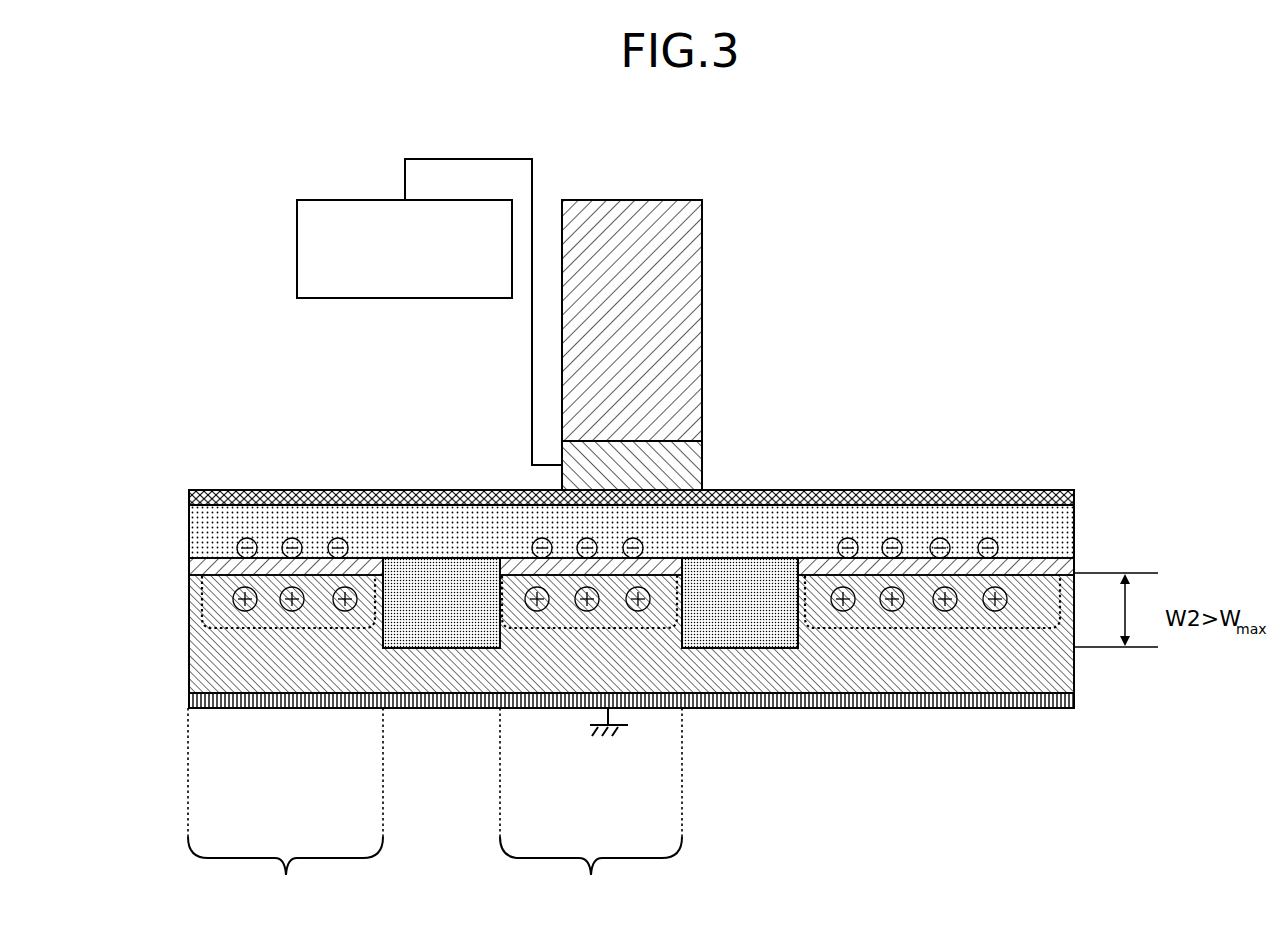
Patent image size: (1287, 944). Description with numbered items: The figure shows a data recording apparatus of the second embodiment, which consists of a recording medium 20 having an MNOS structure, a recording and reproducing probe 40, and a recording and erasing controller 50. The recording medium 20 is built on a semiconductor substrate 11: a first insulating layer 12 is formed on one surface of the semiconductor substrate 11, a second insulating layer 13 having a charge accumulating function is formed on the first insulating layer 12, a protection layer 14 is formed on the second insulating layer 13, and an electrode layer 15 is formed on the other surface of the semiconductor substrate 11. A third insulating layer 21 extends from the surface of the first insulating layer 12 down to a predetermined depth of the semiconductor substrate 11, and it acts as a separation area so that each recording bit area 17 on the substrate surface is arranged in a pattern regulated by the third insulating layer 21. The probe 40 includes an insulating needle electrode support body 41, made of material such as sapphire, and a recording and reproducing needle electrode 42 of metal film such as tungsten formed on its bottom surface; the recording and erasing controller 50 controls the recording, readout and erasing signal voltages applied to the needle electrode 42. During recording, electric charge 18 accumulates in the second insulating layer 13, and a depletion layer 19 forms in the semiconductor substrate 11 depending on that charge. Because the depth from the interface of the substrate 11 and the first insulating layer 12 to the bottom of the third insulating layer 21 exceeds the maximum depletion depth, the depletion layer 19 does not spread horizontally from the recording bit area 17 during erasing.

The semiconductor substrate 11 is at (1074, 668).
The first insulating layer 12 is at (1074, 566).
The second insulating layer 13 is at (1074, 520).
The protection layer 14 is at (947, 494).
The electrode layer 15 is at (1074, 700).
The recording bit area 17 is at (435, 808).
The electric charge 18 is at (541, 538).
The depletion layer 19 is at (662, 630).
The recording medium 20 is at (163, 630).
The third insulating layer 21 is at (422, 590).
The recording and reproducing probe 40 is at (666, 297).
The needle electrode support body 41 is at (702, 228).
The recording and reproducing needle electrode 42 is at (702, 455).
The recording and erasing controller 50 is at (297, 248).